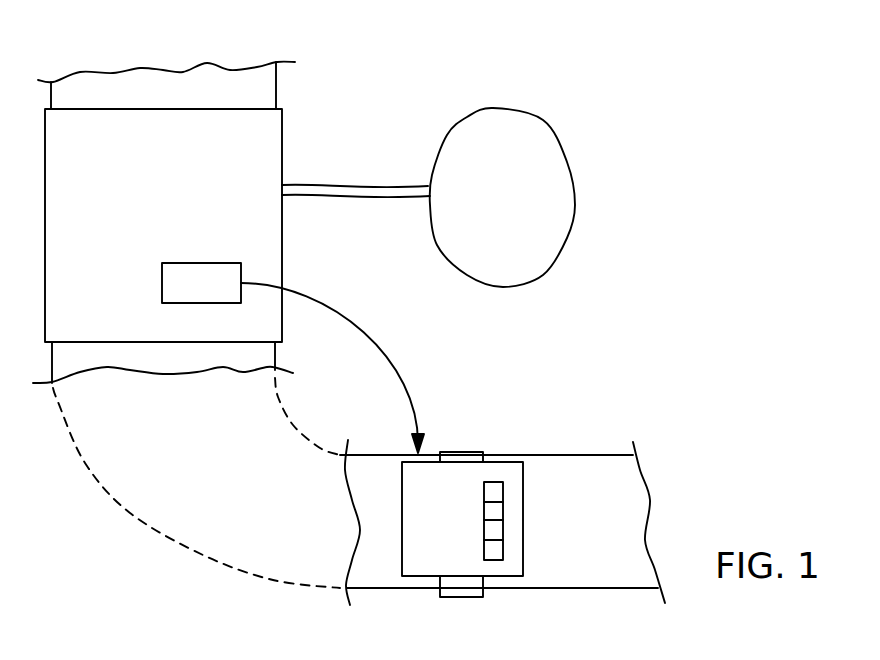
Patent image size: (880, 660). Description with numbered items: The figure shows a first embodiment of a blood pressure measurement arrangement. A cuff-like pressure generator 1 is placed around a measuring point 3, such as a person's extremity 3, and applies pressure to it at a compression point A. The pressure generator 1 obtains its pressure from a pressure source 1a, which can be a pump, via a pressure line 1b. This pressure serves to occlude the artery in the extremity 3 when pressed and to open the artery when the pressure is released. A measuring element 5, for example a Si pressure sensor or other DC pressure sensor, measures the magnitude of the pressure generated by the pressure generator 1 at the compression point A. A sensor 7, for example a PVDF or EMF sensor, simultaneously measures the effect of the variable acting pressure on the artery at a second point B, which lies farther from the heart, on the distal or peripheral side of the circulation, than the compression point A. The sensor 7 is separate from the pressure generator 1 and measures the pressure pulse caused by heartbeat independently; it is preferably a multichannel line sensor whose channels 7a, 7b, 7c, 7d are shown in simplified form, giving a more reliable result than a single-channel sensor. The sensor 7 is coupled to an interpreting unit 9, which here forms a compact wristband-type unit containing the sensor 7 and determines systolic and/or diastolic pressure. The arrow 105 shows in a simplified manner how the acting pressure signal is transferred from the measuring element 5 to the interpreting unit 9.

The pressure generator 1 is at (275, 150).
The pressure source 1a is at (527, 125).
The pressure line 1b is at (375, 184).
The measuring point 3 is at (203, 77).
The measuring element 5 is at (200, 274).
The arrow 105 is at (371, 327).
The sensor 7 is at (476, 510).
The channel 7a is at (493, 492).
The channel 7b is at (497, 508).
The channel 7c is at (497, 527).
The channel 7d is at (497, 550).
The interpreting unit 9 is at (515, 478).
The compression point A is at (268, 88).
The second point B is at (572, 461).